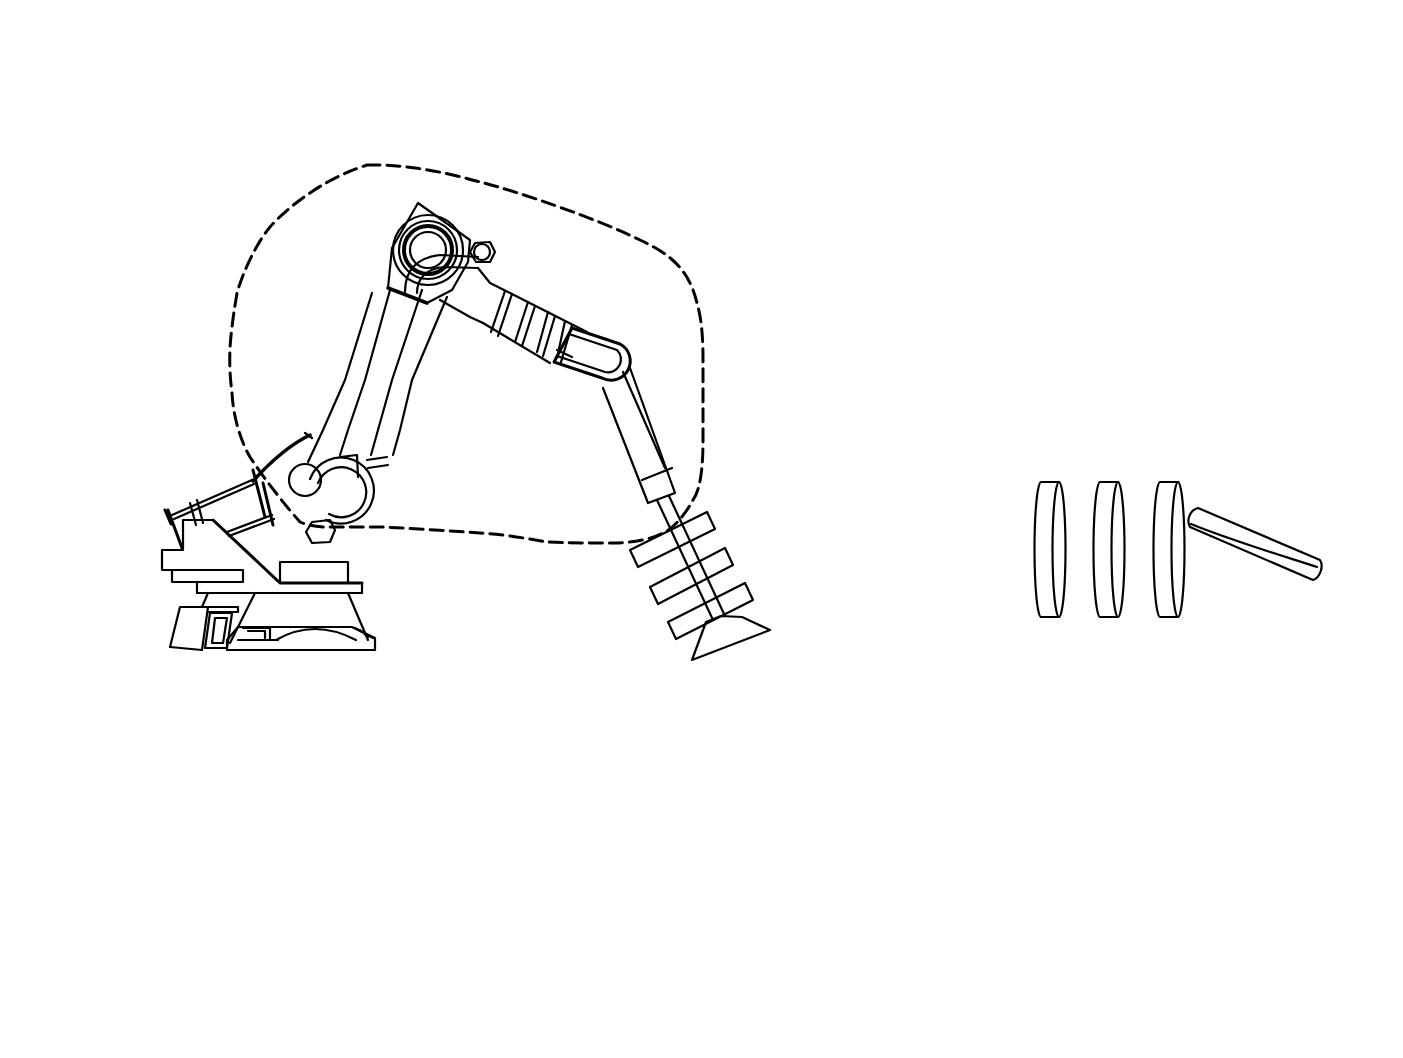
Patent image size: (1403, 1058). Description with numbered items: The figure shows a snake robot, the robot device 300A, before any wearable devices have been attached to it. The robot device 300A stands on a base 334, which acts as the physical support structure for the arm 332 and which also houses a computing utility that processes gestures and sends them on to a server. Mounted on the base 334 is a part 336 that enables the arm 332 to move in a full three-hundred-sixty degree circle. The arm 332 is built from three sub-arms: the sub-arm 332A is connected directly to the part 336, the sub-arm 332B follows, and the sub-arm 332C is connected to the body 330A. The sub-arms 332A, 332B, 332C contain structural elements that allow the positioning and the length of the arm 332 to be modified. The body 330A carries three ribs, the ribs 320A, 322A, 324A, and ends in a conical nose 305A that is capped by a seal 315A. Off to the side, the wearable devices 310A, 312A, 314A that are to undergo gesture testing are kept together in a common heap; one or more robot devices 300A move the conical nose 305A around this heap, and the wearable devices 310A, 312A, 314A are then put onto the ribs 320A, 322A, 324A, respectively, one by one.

The robot device 300A is at (765, 228).
The arm 332 is at (705, 345).
The sub-arm 332A is at (352, 372).
The sub-arm 332B is at (584, 367).
The sub-arm 332C is at (620, 437).
The part 336 is at (340, 549).
The base 334 is at (345, 612).
The body 330A is at (668, 530).
The rib 320A is at (712, 517).
The rib 322A is at (730, 552).
The rib 324A is at (747, 582).
The conical nose 305A is at (734, 645).
The wearable device 310A is at (1050, 482).
The wearable device 312A is at (1107, 617).
The wearable device 314A is at (1170, 482).
The seal 315A is at (1272, 570).